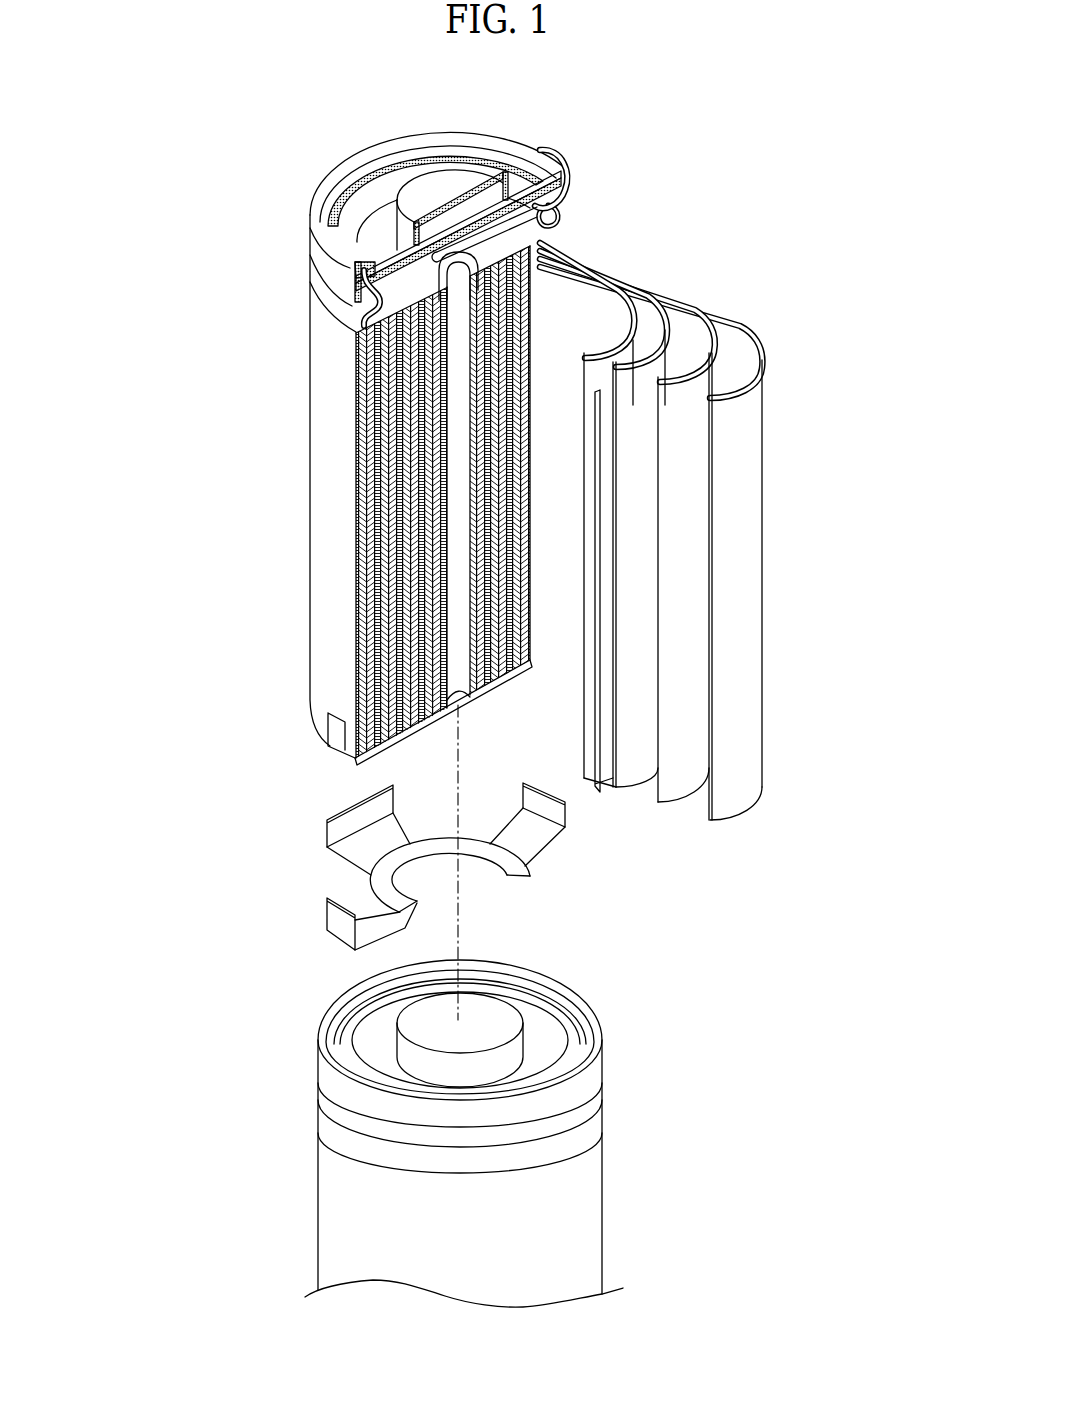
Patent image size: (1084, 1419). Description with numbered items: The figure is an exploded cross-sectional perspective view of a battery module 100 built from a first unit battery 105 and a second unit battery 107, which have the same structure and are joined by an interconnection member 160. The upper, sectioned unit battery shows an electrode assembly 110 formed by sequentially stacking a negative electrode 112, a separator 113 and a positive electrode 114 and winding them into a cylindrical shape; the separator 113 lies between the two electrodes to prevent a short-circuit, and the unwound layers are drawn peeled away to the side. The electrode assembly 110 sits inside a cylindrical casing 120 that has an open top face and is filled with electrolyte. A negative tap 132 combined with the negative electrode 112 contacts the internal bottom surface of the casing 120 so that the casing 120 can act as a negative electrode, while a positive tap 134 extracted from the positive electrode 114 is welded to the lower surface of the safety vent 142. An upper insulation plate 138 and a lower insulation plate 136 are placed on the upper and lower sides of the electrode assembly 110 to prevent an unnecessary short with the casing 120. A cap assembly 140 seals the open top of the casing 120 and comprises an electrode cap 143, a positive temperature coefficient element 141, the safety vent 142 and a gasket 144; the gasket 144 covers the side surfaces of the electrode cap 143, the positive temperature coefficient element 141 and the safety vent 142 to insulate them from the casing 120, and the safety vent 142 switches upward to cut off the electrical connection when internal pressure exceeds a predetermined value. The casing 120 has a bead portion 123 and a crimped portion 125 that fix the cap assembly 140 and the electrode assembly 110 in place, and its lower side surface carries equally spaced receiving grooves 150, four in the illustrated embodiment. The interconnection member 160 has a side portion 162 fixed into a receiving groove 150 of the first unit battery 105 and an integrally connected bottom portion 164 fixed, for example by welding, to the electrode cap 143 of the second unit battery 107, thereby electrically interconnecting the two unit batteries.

The battery module 100 is at (467, 78).
The first unit battery 105 is at (549, 123).
The second unit battery 107 is at (609, 1210).
The electrode assembly 110 is at (782, 898).
The negative electrode 112 is at (585, 778).
The separator 113 is at (637, 782).
The positive electrode 114 is at (685, 788).
The casing 120 is at (312, 450).
The bead portion 123 is at (368, 312).
The crimped portion 125 is at (350, 270).
The negative tap 132 is at (604, 712).
The positive tap 134 is at (562, 250).
The lower insulation plate 136 is at (430, 708).
The upper insulation plate 138 is at (358, 328).
The cap assembly 140 is at (659, 118).
The positive temperature coefficient element 141 is at (566, 170).
The safety vent 142 is at (566, 182).
The electrode cap 143 is at (533, 148).
The gasket 144 is at (560, 210).
The receiving groove 150 is at (328, 748).
The interconnection member 160 is at (350, 882).
The side portion 162 is at (560, 812).
The bottom portion 164 is at (505, 858).